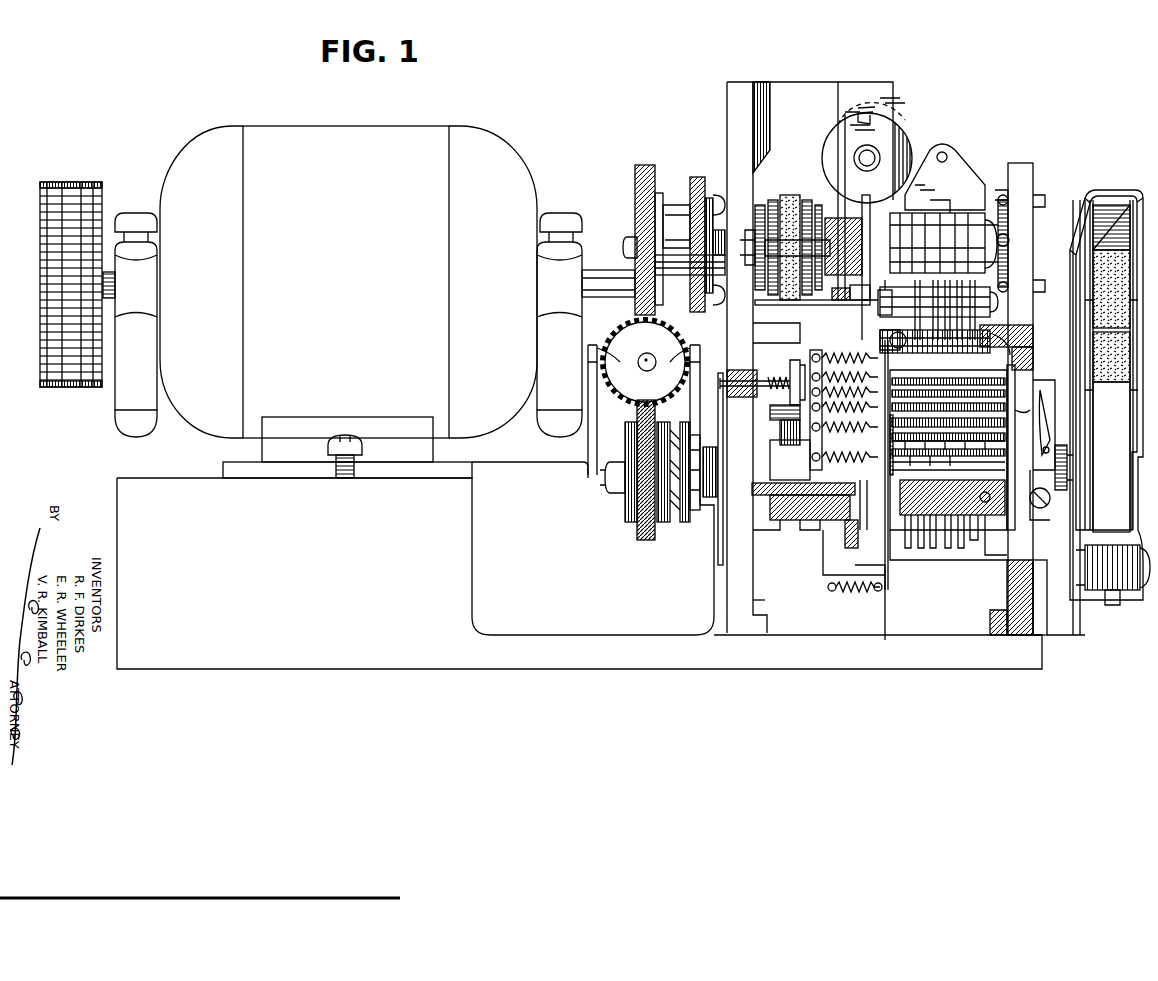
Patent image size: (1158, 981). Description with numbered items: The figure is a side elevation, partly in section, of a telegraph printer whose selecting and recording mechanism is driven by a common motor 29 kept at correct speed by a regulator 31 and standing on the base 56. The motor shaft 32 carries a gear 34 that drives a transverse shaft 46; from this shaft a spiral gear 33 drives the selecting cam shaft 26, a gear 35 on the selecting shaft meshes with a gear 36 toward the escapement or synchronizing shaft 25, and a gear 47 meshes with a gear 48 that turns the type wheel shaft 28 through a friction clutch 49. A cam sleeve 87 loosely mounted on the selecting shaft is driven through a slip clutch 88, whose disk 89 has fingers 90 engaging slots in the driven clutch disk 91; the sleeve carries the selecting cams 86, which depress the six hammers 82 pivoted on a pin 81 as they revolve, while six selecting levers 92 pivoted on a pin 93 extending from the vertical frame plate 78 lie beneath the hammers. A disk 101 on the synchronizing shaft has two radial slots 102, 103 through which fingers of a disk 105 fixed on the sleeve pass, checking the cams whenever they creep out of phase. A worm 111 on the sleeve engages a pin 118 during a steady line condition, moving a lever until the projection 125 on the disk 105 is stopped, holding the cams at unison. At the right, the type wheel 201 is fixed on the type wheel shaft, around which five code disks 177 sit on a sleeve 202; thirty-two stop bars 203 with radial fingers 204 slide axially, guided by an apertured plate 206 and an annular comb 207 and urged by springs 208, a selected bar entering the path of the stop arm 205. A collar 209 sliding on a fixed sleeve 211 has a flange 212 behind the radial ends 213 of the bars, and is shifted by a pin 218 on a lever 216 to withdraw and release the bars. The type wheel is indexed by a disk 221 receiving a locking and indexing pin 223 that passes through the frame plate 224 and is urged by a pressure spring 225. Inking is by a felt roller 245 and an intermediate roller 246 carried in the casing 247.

The escapement or synchronizing shaft 25 is at (858, 152).
The selecting cam shaft 26 is at (627, 242).
The type wheel shaft 28 is at (610, 470).
The motor 29 is at (348, 302).
The regulator 31 is at (65, 388).
The motor shaft 32 is at (597, 290).
The spiral gear 33 is at (637, 186).
The gear 34 is at (690, 254).
The gear 35 is at (697, 178).
The gear 36 is at (708, 200).
The transverse shaft 46 is at (655, 368).
The gear 47 is at (645, 362).
The gear 48 is at (640, 540).
The friction clutch 49 is at (660, 530).
The base 56 is at (1015, 660).
The vertical frame plate 78 is at (1030, 180).
The pivot pin 81 is at (993, 305).
The interponent members or hammers 82 is at (892, 318).
The selecting cams 86 is at (930, 213).
The cam sleeve 87 is at (1005, 248).
The slip clutch 88 is at (790, 200).
The disk 89 is at (834, 207).
The fingers 90 is at (808, 197).
The driven clutch disk 91 is at (788, 200).
The selecting levers 92 is at (895, 353).
The pin 93 is at (890, 340).
The disk 101 is at (905, 135).
The radial slot 102 is at (872, 170).
The radial slot 103 is at (890, 112).
The disk 105 is at (846, 302).
The worm 111 is at (847, 247).
The pin 118 is at (805, 302).
The projection 125 is at (842, 326).
The code disks 177 is at (955, 545).
The type wheel 201 is at (1082, 452).
The sleeve 202 is at (985, 497).
The stop bars 203 is at (957, 395).
The radial fingers 204 is at (922, 555).
The stop arm 205 is at (1042, 488).
The apertured plate 206 is at (1020, 585).
The annular comb 207 is at (888, 580).
The springs 208 is at (848, 595).
The collar 209 is at (790, 515).
The fixed sleeve 211 is at (790, 460).
The flange 212 is at (855, 547).
The radial ends 213 is at (830, 540).
The lever 216 is at (775, 420).
The pin 218 is at (790, 438).
The disk 221 is at (718, 553).
The locking and indexing pin 223 is at (745, 370).
The frame plate 224 is at (740, 602).
The pressure spring 225 is at (779, 380).
The felt inking roller 245 is at (1100, 336).
The intermediate roller 246 is at (1105, 370).
The casing 247 is at (1115, 190).